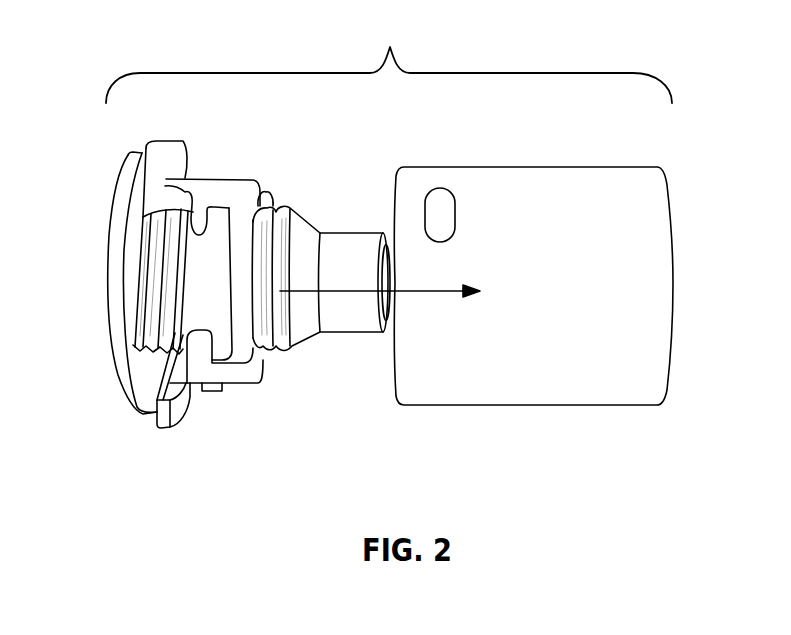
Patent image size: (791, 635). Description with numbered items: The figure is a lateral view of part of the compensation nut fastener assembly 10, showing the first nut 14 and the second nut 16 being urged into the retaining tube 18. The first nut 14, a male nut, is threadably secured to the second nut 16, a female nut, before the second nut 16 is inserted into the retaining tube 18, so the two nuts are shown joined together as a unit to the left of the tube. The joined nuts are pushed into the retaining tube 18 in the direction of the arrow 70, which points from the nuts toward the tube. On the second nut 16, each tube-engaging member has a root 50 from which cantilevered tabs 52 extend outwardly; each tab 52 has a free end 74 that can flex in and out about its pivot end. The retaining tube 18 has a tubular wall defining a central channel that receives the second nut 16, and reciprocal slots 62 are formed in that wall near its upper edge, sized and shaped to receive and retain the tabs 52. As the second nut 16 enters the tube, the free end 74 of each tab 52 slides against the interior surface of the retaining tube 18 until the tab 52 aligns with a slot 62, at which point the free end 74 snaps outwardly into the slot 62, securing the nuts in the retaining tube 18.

The compensation nut fastener assembly 10 is at (389, 58).
The first nut 14 is at (115, 355).
The second nut 16 is at (220, 175).
The retaining tube 18 is at (557, 167).
The root 50 is at (240, 196).
The cantilevered tab 52 is at (206, 215).
The reciprocal slot 62 is at (443, 212).
The arrow 70 is at (423, 292).
The free end 74 is at (203, 231).